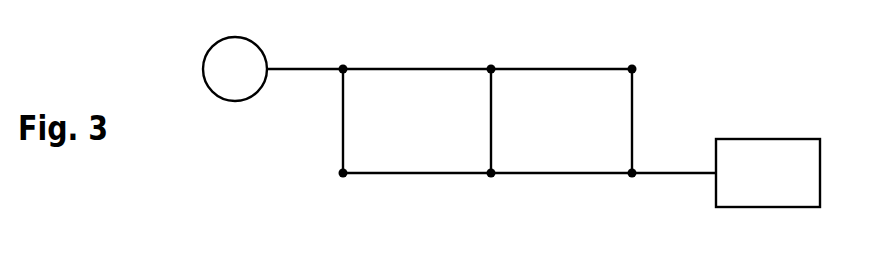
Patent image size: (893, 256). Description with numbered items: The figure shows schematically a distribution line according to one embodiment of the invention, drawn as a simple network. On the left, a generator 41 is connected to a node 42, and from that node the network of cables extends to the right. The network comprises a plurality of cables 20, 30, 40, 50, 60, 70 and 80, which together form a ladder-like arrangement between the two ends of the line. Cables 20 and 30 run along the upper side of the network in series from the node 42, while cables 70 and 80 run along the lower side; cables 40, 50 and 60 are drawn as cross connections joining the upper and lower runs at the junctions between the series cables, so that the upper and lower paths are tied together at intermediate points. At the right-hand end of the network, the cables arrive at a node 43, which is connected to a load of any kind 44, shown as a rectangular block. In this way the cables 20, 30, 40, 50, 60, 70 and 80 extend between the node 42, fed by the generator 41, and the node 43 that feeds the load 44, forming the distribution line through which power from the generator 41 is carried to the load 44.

The generator 41 is at (236, 37).
The node 42 is at (345, 68).
The cable 20 is at (430, 69).
The cable 30 is at (583, 69).
The cable 40 is at (344, 120).
The cable 50 is at (492, 120).
The cable 60 is at (633, 102).
The cable 70 is at (395, 173).
The cable 80 is at (533, 173).
The node 43 is at (634, 172).
The load 44 is at (732, 139).